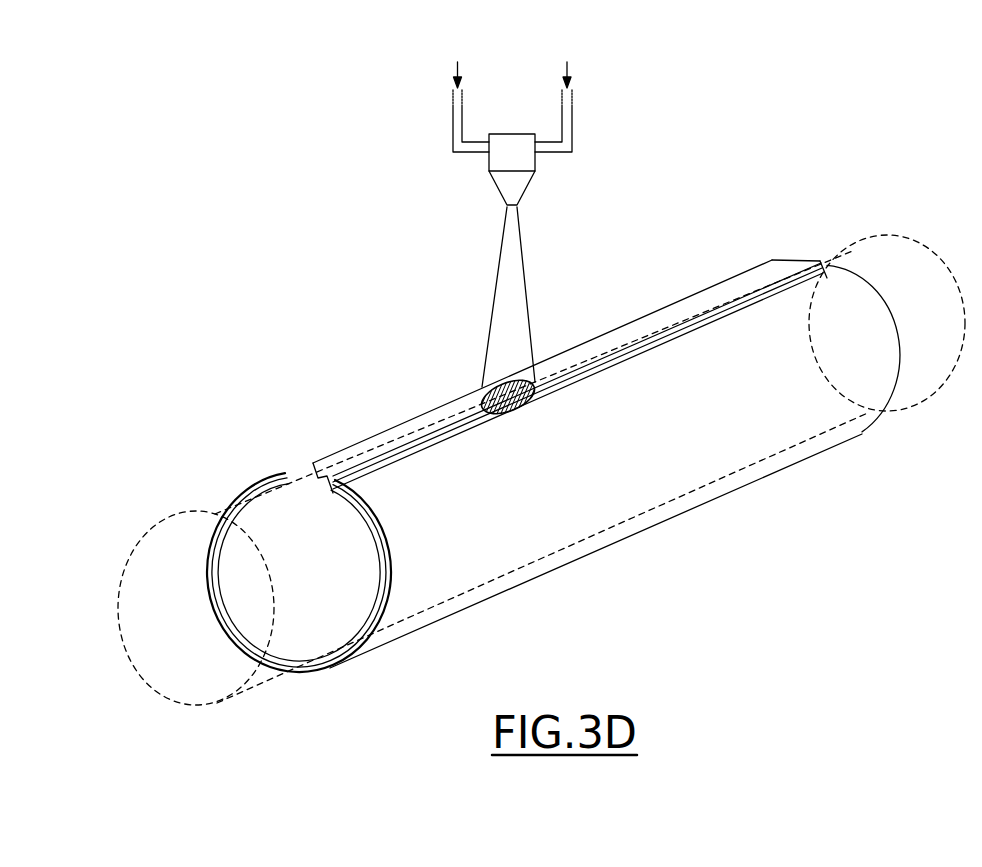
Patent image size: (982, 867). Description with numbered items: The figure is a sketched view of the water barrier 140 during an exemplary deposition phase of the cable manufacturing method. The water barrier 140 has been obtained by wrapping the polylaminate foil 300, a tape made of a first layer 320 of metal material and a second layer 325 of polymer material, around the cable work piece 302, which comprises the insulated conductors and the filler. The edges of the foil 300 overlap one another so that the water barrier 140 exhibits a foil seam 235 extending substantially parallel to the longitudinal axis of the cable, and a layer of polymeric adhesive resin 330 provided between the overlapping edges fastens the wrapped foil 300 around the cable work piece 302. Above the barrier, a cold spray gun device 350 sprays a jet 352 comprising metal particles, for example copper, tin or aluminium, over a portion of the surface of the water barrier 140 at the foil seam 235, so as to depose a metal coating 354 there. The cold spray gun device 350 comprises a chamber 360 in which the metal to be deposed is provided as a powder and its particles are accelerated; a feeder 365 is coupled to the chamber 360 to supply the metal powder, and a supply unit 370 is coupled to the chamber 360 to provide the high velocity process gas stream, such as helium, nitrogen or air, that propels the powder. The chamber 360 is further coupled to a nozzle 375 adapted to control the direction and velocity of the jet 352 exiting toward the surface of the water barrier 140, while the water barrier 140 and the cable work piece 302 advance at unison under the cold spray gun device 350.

The water barrier 140 is at (867, 452).
The foil seam 235 is at (830, 242).
The polylaminate foil 300 is at (740, 490).
The cable work piece 302 is at (213, 703).
The first layer of metal material 320 is at (363, 527).
The second layer of polymer material 325 is at (390, 553).
The layer of polymeric adhesive resin 330 is at (678, 337).
The cold spray gun device 350 is at (540, 156).
The jet 352 is at (490, 299).
The metal coating 354 is at (430, 447).
The chamber 360 is at (489, 161).
The feeder 365 is at (452, 113).
The supply unit 370 is at (573, 137).
The nozzle 375 is at (506, 204).